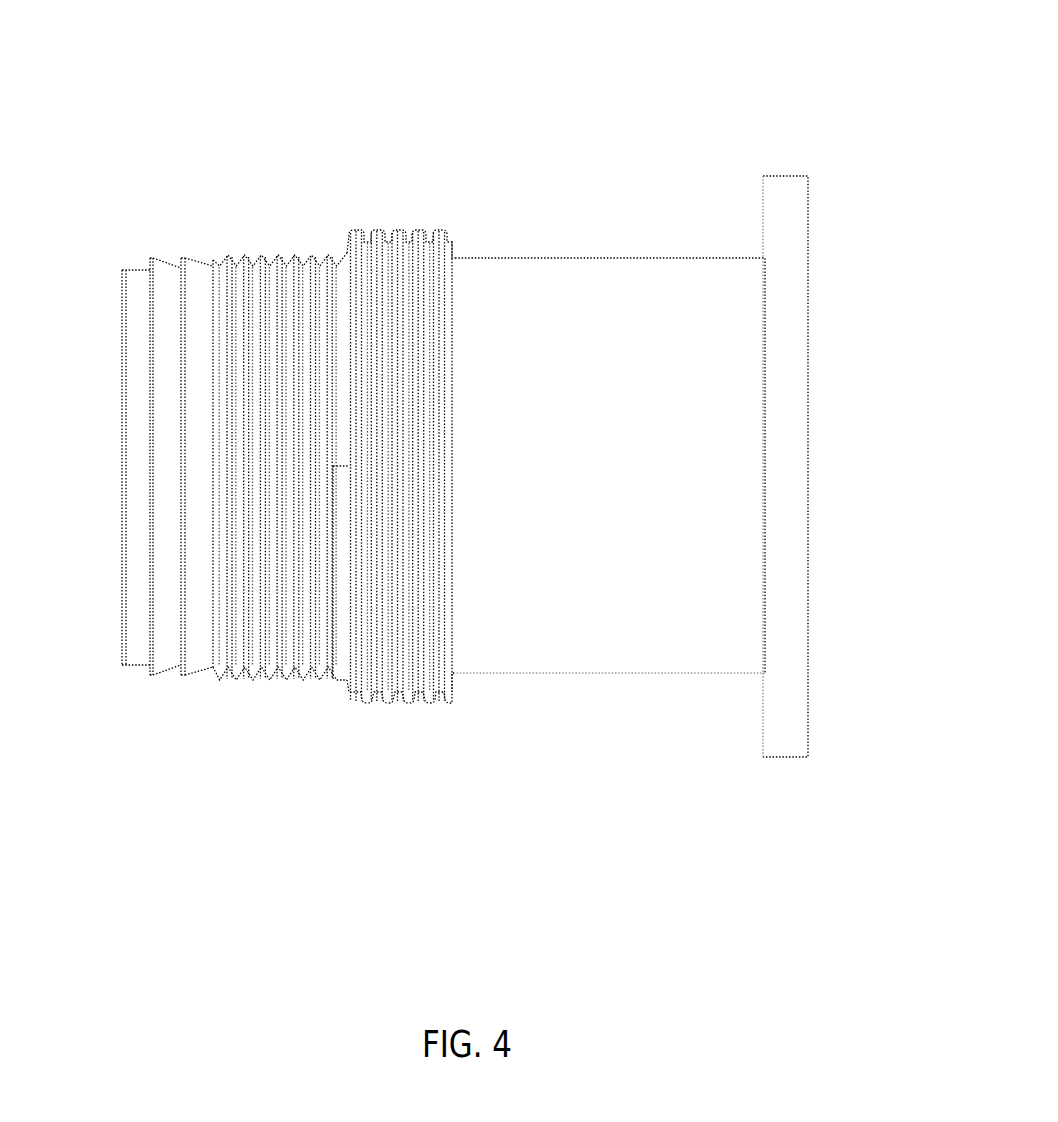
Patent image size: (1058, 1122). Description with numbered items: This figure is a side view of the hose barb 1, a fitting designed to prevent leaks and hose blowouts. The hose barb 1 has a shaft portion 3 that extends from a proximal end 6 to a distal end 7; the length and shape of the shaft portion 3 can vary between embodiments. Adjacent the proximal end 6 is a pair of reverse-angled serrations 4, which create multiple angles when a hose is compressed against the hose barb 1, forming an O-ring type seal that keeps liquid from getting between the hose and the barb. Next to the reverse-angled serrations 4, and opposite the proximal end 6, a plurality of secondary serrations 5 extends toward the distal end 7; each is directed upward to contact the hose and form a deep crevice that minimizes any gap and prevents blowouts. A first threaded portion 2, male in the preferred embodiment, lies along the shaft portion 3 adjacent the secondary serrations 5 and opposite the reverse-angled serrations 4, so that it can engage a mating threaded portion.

The hose barb 1 is at (600, 100).
The first threaded portion 2 is at (427, 238).
The shaft portion 3 is at (608, 673).
The pair of reverse-angled serrations 4 is at (213, 266).
The plurality of secondary serrations 5 is at (290, 262).
The proximal end 6 is at (122, 375).
The distal end 7 is at (808, 200).